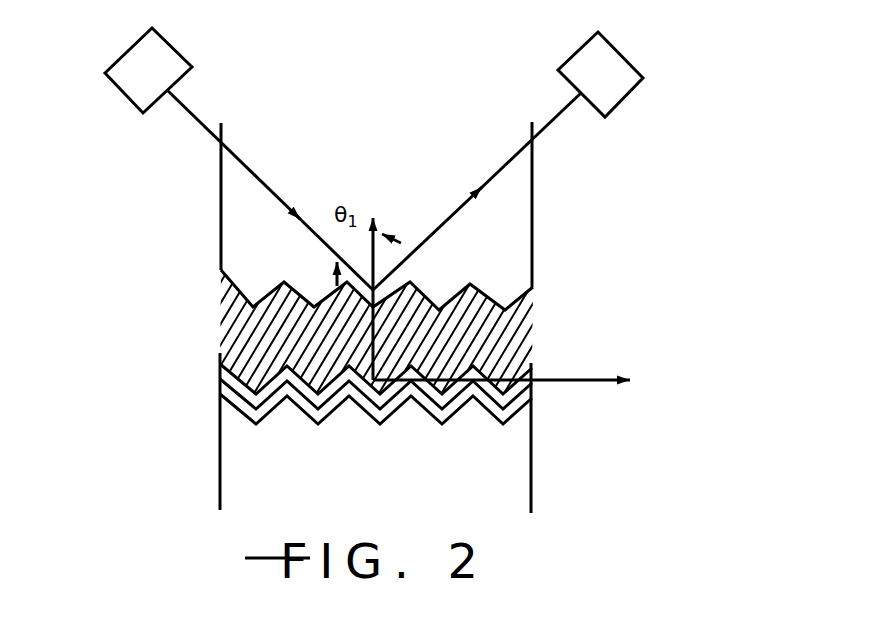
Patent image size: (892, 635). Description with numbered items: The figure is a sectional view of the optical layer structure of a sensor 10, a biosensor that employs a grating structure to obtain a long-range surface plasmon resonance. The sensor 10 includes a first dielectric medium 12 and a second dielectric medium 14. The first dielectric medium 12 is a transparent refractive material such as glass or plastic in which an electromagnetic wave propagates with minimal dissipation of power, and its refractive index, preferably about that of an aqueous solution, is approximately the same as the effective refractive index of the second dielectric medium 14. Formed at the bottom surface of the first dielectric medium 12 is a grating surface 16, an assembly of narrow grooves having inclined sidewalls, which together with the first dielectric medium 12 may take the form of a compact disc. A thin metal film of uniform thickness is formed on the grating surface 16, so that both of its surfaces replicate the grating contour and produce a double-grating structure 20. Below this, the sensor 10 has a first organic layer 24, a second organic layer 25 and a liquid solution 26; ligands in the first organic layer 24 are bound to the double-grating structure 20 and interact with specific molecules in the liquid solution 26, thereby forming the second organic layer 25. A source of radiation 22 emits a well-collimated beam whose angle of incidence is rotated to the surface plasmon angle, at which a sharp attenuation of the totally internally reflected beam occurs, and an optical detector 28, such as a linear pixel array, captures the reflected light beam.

The sensor 10 is at (612, 244).
The first dielectric medium 12 is at (574, 181).
The second dielectric medium 14 is at (576, 416).
The grating surface 16 is at (228, 283).
The double-grating structure 20 is at (227, 337).
The source of radiation 22 is at (127, 97).
The first organic layer 24 is at (219, 378).
The second organic layer 25 is at (530, 408).
The liquid solution 26 is at (375, 495).
The optical detector 28 is at (637, 65).